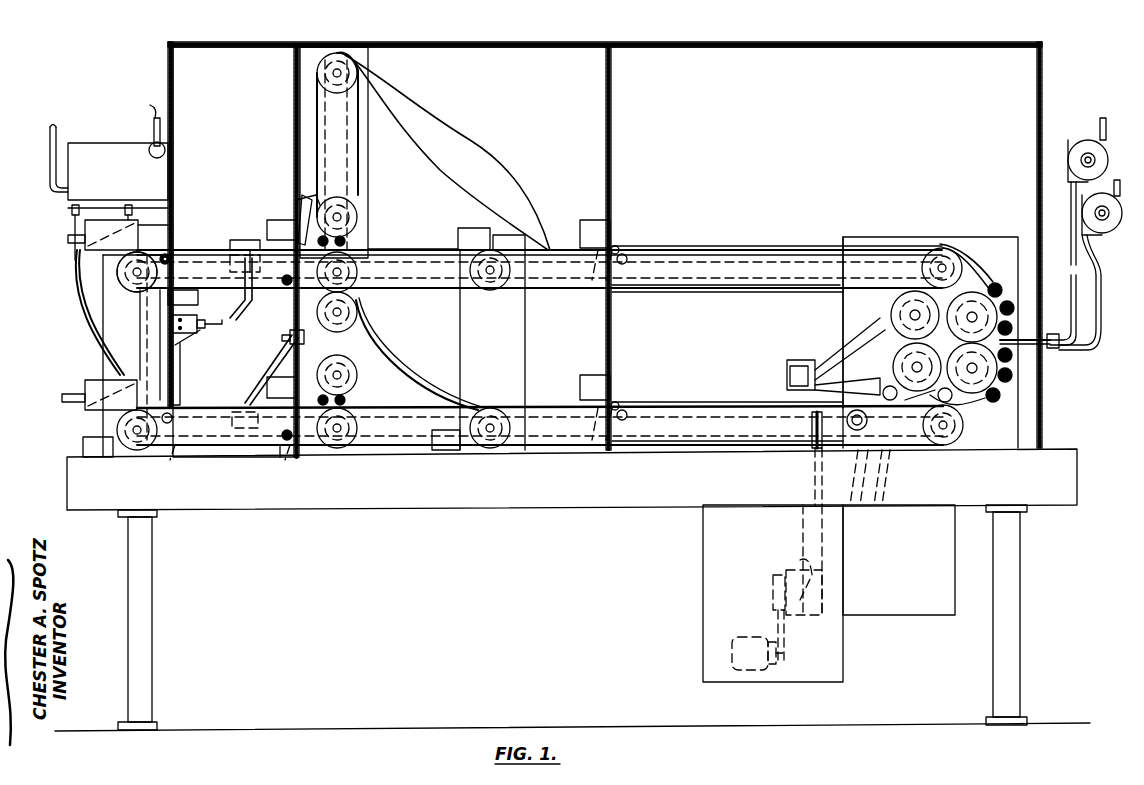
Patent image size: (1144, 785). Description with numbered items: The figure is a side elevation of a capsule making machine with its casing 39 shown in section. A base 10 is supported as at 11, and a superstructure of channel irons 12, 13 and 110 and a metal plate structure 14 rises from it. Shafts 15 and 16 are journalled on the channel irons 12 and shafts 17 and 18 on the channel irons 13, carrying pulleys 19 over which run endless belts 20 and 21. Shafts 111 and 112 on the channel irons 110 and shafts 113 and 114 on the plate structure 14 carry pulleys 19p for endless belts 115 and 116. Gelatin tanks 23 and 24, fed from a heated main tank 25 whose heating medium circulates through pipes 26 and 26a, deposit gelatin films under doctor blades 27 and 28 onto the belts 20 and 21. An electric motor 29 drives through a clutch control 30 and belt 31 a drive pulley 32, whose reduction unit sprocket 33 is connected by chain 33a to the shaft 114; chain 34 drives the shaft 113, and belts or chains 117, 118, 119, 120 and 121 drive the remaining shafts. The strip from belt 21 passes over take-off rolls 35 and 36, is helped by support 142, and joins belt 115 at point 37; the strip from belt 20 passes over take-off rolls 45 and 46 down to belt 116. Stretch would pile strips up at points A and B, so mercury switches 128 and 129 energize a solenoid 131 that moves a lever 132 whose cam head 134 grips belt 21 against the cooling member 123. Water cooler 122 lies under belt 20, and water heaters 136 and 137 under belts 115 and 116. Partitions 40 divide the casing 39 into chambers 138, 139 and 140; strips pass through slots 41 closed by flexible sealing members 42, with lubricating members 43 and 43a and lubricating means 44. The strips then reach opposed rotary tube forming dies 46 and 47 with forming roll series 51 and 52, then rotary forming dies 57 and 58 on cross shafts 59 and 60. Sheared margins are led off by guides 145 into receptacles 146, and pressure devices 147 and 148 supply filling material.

The base 10 is at (480, 510).
The supports 11 is at (148, 602).
The channel irons 12 is at (104, 362).
The channel irons 13 is at (362, 190).
The metal plate structure 14 is at (973, 245).
The shaft 15 is at (140, 456).
The shaft 16 is at (132, 268).
The shaft 17 is at (360, 290).
The shaft 18 is at (360, 420).
The pulleys 19 is at (130, 450).
The pulleys 19p is at (470, 282).
The endless belt 20 is at (232, 455).
The endless belt 21 is at (195, 292).
The gelatin tank 23 is at (85, 230).
The gelatin tank 24 is at (85, 386).
The main tank 25 is at (88, 143).
The pipe 26 is at (48, 150).
The pipe 26a is at (140, 129).
The doctor blade 27 is at (140, 232).
The doctor blade 28 is at (135, 388).
The electric motor 29 is at (728, 653).
The clutch control 30 is at (838, 588).
The belt 31 is at (830, 533).
The drive pulley 32 is at (812, 435).
The sprocket 33 is at (854, 450).
The chain 33a is at (865, 457).
The chain 34 is at (962, 264).
The take-off roll 35 is at (360, 215).
The take-off roll 36 is at (360, 73).
The point 37 is at (572, 248).
The casing 39 is at (700, 46).
The partitions 40 is at (294, 102).
The slots 41 is at (620, 248).
The sealing members 42 is at (230, 242).
The lubricating member 43 is at (272, 225).
The lubricating member 43a is at (592, 375).
The lubricating means 44 is at (472, 242).
The take-off roll 45 is at (360, 375).
The take-off roll; rotary tube forming die 46 is at (362, 322).
The rotary tube forming die 47 is at (1000, 372).
The forming rolls 51 is at (1000, 285).
The forming rolls 52 is at (1015, 395).
The rotary forming die 57 is at (905, 300).
The rotary forming die 58 is at (850, 343).
The cross shaft 59 is at (910, 315).
The cross shaft 60 is at (912, 366).
The channel irons 110 is at (518, 320).
The shaft 111 is at (490, 285).
The shaft 112 is at (497, 408).
The shaft 113 is at (942, 250).
The shaft 114 is at (945, 445).
The endless belt 115 is at (678, 285).
The endless belt 116 is at (666, 450).
The belt or chain 117 is at (752, 250).
The belt or chain 118 is at (432, 275).
The belt or chain 119 is at (215, 250).
The belt or chain 120 is at (105, 338).
The belt or chain 121 is at (275, 458).
The water cooler 122 is at (225, 457).
The cooling member 123 is at (275, 290).
The mercury switch 128 is at (362, 342).
The mercury switch 129 is at (316, 197).
The solenoid 131 is at (195, 325).
The lever 132 is at (235, 300).
The elliptical cam head 134 is at (250, 250).
The water heater 136 is at (727, 305).
The water heater 137 is at (758, 405).
The chamber 138 is at (196, 102).
The chamber 139 is at (505, 75).
The chamber 140 is at (850, 60).
The support 142 is at (372, 50).
The guides 145 is at (945, 400).
The receptacles 146 is at (914, 612).
The pressure device 147 is at (1082, 143).
The pressure device 148 is at (1094, 228).
The point A is at (350, 241).
The point B is at (350, 400).